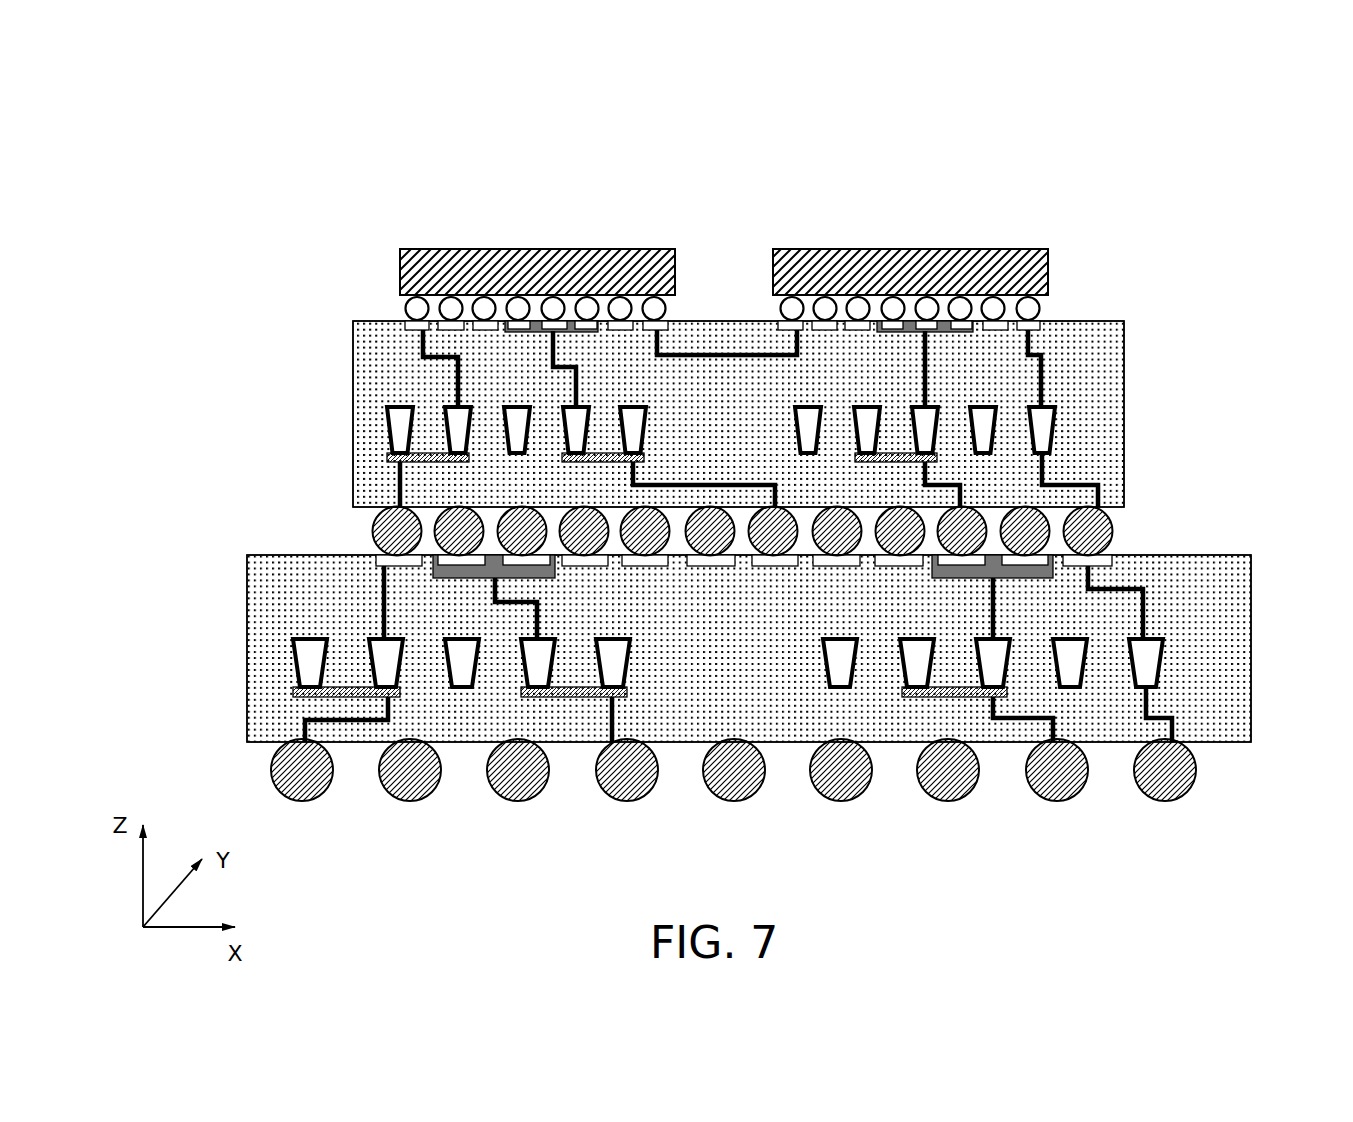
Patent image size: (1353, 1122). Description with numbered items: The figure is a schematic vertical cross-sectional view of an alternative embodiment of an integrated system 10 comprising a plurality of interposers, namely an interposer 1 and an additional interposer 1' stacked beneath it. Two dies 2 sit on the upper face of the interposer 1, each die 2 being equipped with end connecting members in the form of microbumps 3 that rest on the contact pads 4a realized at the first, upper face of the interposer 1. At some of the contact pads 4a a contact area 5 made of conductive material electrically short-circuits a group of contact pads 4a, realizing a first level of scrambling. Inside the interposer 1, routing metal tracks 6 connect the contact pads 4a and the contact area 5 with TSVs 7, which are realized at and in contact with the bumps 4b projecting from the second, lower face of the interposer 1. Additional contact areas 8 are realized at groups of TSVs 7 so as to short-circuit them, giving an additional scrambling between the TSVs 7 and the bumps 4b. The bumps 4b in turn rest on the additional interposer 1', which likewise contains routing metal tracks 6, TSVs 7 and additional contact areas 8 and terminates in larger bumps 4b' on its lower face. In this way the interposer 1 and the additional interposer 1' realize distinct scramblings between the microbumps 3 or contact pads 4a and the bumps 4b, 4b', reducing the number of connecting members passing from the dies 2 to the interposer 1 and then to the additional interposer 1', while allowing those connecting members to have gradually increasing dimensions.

The integrated system 10 is at (1086, 128).
The interposer 1 is at (776, 368).
The additional interposer 1' is at (756, 590).
The die 2 is at (517, 262).
The microbumps 3 is at (407, 307).
The contact pads 4a is at (485, 318).
The bumps 4b is at (669, 497).
The bumps of the additional interposer 4b' is at (676, 735).
The contact area 5 is at (575, 318).
The routing metal tracks 6 is at (735, 353).
The TSVs 7 is at (1045, 437).
The additional contact areas 8 is at (396, 455).